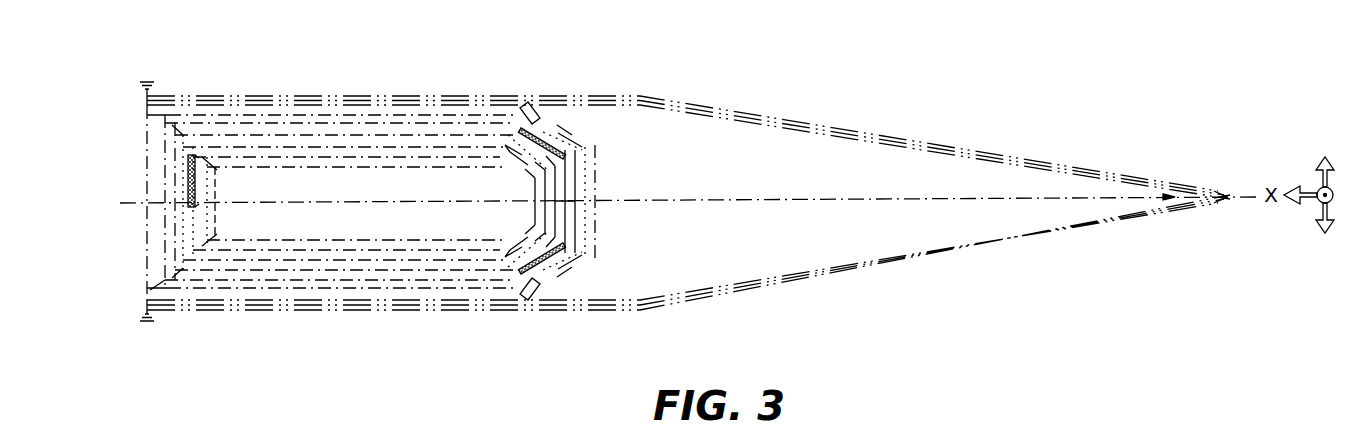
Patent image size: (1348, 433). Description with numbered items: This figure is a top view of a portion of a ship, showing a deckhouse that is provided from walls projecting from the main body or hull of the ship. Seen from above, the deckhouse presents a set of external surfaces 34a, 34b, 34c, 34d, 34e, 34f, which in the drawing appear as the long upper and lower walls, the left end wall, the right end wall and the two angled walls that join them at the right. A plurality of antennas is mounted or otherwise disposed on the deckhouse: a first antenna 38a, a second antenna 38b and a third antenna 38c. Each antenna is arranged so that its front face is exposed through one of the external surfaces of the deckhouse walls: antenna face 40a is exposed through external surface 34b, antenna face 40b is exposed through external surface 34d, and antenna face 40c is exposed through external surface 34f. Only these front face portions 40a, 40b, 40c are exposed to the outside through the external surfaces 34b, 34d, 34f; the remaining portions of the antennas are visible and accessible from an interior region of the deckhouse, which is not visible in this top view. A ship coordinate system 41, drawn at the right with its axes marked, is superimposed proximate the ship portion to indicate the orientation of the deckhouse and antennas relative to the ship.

The external surface of deckhouse 34a is at (283, 252).
The external surface of deckhouse 34b is at (518, 240).
The external surface of deckhouse 34c is at (576, 228).
The external surface of deckhouse 34d is at (541, 105).
The external surface of deckhouse 34e is at (336, 122).
The external surface of deckhouse 34f is at (180, 233).
The antenna 38a is at (568, 252).
The antenna 38b is at (568, 150).
The antenna 38c is at (188, 170).
The antenna face 40a is at (537, 297).
The antenna face 40b is at (571, 149).
The antenna face 40c is at (196, 152).
The ship coordinate system 41 is at (1265, 260).